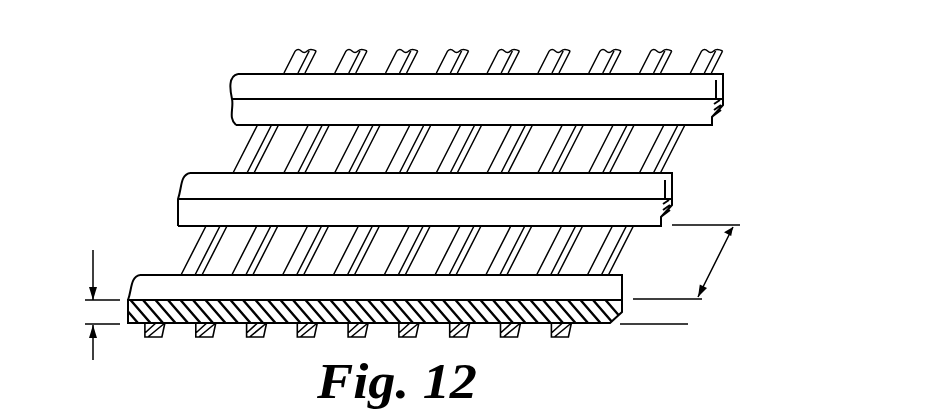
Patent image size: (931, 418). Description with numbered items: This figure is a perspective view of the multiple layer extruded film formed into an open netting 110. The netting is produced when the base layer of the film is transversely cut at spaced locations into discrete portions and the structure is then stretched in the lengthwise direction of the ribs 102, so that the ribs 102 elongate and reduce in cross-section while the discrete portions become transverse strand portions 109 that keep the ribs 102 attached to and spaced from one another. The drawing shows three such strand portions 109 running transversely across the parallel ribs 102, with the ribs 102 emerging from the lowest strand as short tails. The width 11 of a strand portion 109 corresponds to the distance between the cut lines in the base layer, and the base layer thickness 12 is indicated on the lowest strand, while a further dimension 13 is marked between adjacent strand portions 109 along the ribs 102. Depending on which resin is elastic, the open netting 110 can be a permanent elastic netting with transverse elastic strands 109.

The open netting 110 is at (678, 55).
The strand portions 109 is at (665, 174).
The width 11 is at (680, 328).
The base layer thickness 12 is at (93, 251).
The housing spacing distance 13 is at (717, 262).
The ribs 102 is at (157, 336).